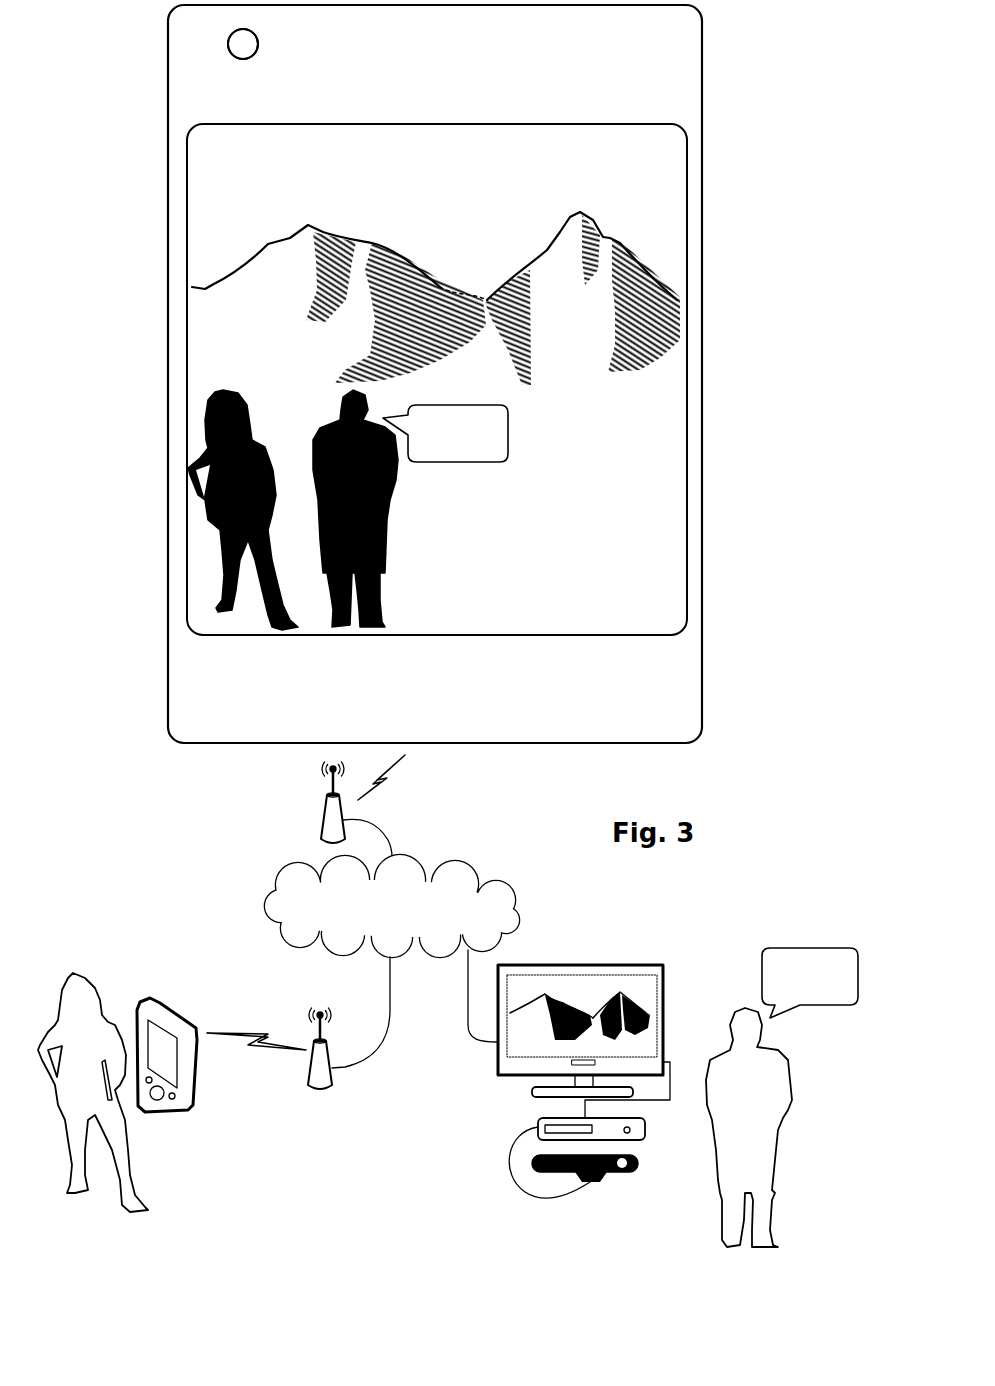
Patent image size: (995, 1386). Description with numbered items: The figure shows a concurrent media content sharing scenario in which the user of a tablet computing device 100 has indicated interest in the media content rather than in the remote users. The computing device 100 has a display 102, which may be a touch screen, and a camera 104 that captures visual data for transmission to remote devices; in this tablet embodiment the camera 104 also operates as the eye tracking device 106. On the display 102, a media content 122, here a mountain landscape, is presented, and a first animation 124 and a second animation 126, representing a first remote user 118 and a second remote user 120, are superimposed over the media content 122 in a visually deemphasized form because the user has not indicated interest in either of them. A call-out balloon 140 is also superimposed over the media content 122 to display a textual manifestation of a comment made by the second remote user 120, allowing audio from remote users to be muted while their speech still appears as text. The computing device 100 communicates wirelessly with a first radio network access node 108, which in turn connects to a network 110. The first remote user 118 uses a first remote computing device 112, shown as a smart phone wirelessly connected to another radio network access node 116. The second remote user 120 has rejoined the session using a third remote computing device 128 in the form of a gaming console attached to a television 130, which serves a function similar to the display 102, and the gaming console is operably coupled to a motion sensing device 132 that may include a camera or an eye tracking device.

The computing device 100 is at (420, 719).
The display 102 is at (418, 194).
The camera 104 is at (258, 40).
The eye tracking device 106 is at (241, 60).
The first radio network access node 108 is at (320, 820).
The network 110 is at (373, 934).
The first remote computing device 112 is at (175, 1112).
The radio network access node 116 is at (316, 1090).
The first remote user 118 is at (73, 1049).
The second remote user 120 is at (728, 1097).
The media content 122 is at (552, 400).
The first animation 124 is at (221, 466).
The second animation 126 is at (336, 476).
The third remote computing device 128 is at (648, 1150).
The television 130 is at (625, 965).
The motion sensing device 132 is at (570, 1201).
The call-out balloon 140 is at (477, 462).